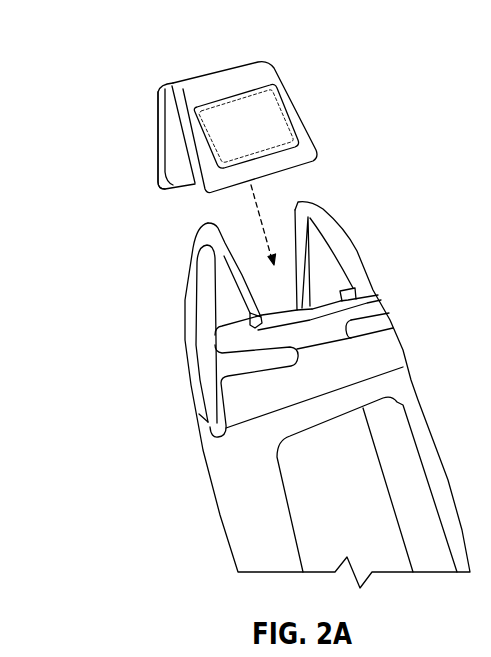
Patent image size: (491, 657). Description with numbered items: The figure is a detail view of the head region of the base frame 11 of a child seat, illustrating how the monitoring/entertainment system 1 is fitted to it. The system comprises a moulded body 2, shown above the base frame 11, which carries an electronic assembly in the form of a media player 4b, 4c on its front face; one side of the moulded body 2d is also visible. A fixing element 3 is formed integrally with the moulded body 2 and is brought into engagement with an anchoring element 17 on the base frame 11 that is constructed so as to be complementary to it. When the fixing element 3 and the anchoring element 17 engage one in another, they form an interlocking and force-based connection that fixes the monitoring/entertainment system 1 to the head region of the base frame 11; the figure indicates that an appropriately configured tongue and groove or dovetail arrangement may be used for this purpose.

The monitoring/entertainment system 1 is at (360, 73).
The moulded body 2 is at (207, 96).
The side of the moulded body 2d is at (158, 95).
The fixing element 3 is at (178, 168).
The media player (electronic assembly) 4b is at (296, 126).
The media player (electronic assembly) 4c is at (263, 147).
The base frame 11 is at (230, 525).
The anchoring element (bulbous projection, anchoring groove) 17 is at (255, 318).